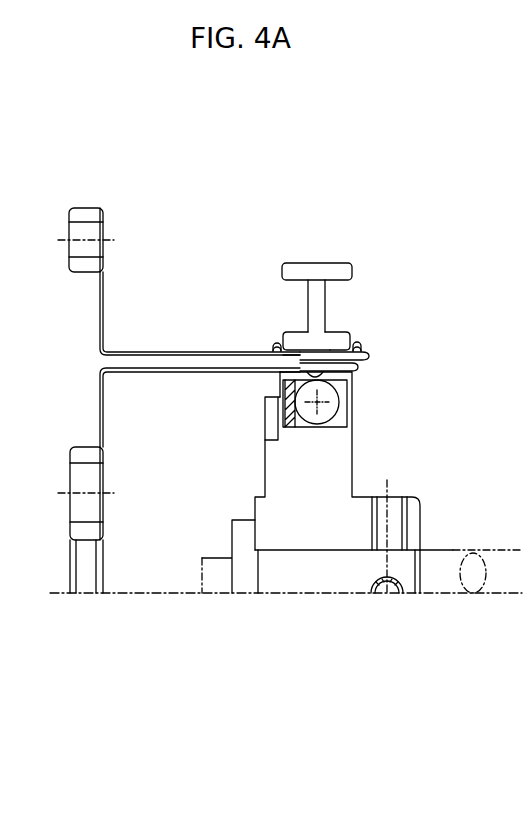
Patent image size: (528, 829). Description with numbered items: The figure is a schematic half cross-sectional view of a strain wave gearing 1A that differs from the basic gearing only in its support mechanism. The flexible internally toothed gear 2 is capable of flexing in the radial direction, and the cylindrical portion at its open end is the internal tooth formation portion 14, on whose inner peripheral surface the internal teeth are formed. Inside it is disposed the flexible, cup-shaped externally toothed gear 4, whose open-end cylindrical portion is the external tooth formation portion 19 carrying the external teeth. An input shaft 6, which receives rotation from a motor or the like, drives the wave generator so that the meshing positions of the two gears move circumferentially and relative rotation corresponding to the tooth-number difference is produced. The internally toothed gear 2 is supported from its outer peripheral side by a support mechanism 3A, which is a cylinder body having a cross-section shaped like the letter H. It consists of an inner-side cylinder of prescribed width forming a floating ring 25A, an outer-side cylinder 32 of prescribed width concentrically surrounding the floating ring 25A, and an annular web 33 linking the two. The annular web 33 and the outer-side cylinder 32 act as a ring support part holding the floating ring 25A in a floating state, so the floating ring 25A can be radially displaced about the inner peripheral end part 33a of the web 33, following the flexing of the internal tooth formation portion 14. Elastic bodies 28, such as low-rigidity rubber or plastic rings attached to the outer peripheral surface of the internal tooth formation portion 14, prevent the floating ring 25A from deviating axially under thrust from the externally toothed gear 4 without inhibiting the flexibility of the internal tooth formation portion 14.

The strain wave gearing 1A is at (358, 218).
The support mechanism 3A is at (360, 297).
The outer-side cylinder 32 is at (280, 273).
The annular web 33 is at (303, 310).
The inner peripheral end part 33a is at (287, 325).
The floating ring 25A is at (355, 335).
The elastic bodies 28 is at (360, 345).
The internally toothed gear 2 is at (380, 355).
The internal tooth formation portion 14 is at (297, 370).
The externally toothed gear 4 is at (357, 420).
The external tooth formation portion 19 is at (277, 412).
The input shaft 6 is at (450, 550).